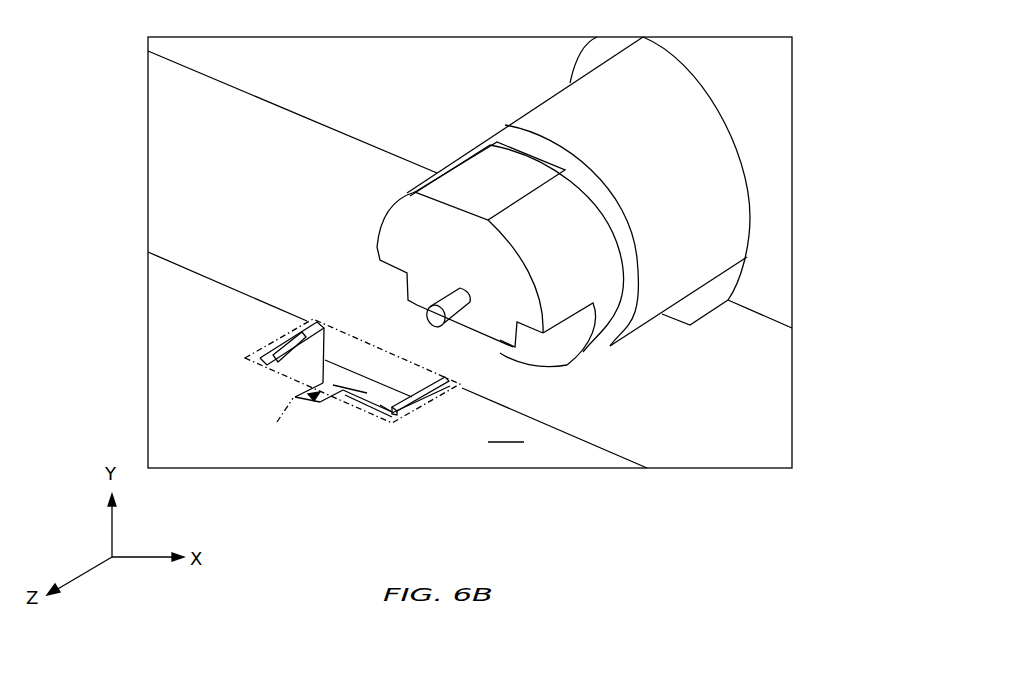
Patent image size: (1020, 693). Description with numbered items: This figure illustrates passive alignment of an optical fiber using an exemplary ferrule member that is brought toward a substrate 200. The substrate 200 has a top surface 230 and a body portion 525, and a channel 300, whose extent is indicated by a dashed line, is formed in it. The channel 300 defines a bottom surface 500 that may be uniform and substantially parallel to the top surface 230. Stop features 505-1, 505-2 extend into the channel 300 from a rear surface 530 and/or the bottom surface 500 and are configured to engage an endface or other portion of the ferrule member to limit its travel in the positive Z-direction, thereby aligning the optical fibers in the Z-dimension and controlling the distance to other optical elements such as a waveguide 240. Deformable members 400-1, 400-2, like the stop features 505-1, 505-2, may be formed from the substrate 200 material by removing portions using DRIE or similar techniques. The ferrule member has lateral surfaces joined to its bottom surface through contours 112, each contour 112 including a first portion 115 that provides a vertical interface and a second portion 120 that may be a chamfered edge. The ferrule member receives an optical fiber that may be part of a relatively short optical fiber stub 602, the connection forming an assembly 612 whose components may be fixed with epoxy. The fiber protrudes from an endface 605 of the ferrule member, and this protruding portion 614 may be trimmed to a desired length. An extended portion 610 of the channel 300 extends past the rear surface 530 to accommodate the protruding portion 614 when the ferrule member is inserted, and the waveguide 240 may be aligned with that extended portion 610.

The substrate 200 is at (157, 316).
The top surface 230 is at (157, 383).
The body portion 525 is at (506, 432).
The optical fiber stub 602 is at (540, 103).
The assembly 612 is at (652, 340).
The endface 605 is at (400, 226).
The protruding portion 614 is at (460, 310).
The first portion 115 is at (568, 361).
The second portion 120 is at (552, 363).
The contour 112 is at (645, 376).
The channel 300 is at (345, 331).
The stop feature 505-1 is at (282, 370).
The deformable member 400-1 is at (292, 336).
The waveguide 240 is at (288, 414).
The extended portion 610 is at (310, 403).
The stop feature 505-2 is at (353, 398).
The bottom surface 500 is at (352, 380).
The rear surface 530 is at (381, 418).
The deformable member 400-2 is at (427, 413).